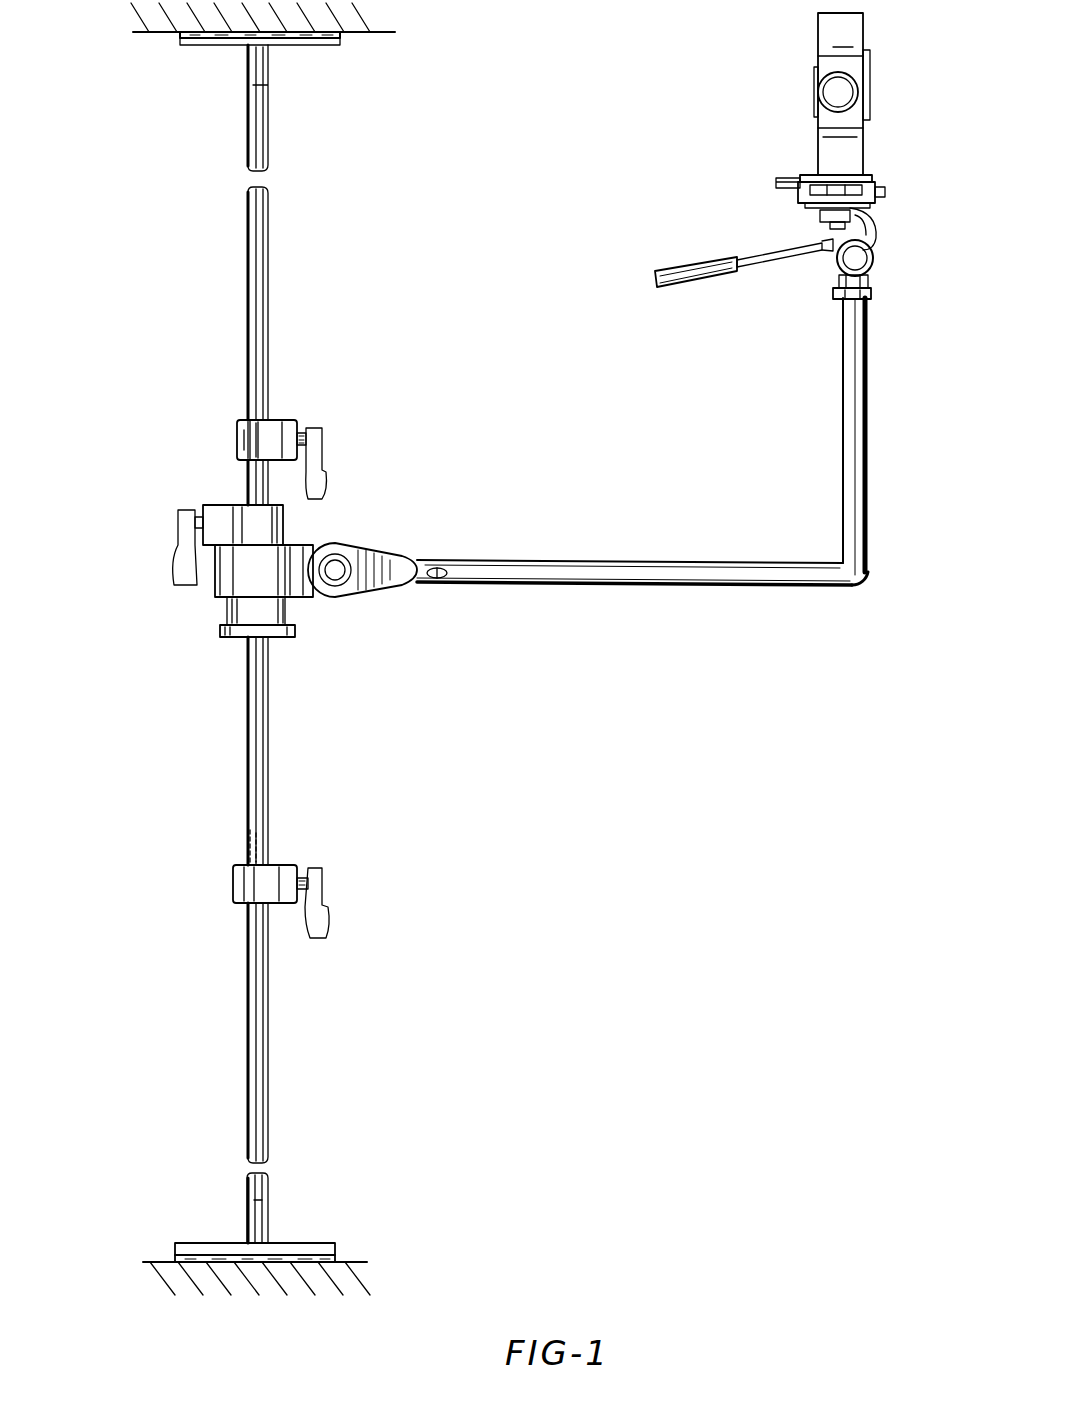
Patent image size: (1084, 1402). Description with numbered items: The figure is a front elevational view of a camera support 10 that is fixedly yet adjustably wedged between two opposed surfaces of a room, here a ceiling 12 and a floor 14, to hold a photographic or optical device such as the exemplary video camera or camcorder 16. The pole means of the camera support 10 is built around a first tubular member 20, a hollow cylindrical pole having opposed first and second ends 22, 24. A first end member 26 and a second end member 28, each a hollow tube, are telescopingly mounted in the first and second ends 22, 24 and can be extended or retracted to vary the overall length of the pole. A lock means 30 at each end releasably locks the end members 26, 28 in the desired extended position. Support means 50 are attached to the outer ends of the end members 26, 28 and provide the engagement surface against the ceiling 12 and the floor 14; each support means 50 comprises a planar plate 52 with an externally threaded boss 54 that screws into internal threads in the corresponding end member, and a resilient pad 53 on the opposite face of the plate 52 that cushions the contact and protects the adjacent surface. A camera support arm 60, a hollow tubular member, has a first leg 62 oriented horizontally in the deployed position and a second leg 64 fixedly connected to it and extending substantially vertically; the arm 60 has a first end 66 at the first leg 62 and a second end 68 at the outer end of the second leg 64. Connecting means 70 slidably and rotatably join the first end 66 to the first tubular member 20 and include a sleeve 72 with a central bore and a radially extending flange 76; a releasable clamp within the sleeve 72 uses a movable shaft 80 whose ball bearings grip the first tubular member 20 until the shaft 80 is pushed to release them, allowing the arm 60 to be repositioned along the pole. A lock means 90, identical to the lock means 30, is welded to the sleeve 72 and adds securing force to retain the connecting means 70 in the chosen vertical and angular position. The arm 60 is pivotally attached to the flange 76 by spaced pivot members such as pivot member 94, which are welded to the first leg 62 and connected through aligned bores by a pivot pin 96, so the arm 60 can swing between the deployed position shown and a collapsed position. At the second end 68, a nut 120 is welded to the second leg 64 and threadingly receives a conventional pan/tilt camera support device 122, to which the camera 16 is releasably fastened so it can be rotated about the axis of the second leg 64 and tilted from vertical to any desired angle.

The camera support 10 is at (190, 462).
The ceiling 12 is at (153, 36).
The floor 14 is at (160, 1265).
The video camera or camcorder 16 is at (818, 147).
The first tubular member 20 is at (253, 710).
The first end 22 is at (245, 420).
The second end 24 is at (245, 897).
The first end member 26 is at (250, 220).
The second end member 28 is at (248, 1085).
The lock means 30 is at (278, 412).
The support means 50 is at (318, 50).
The planar plate 52 is at (335, 45).
The resilient pad 53 is at (340, 39).
The externally threaded boss 54 is at (248, 1218).
The camera support arm 60 is at (760, 500).
The first leg 62 is at (693, 582).
The second leg 64 is at (848, 452).
The first end 66 is at (362, 580).
The second end 68 is at (862, 296).
The connecting means 70 is at (218, 588).
The sleeve 72 is at (262, 583).
The flange 76 is at (320, 597).
The shaft 80 is at (230, 612).
The lock means 90 is at (220, 497).
The pivot member 94 is at (345, 547).
The pivot pin 96 is at (337, 562).
The nut 120 is at (835, 298).
The pan/tilt camera support device 122 is at (795, 212).